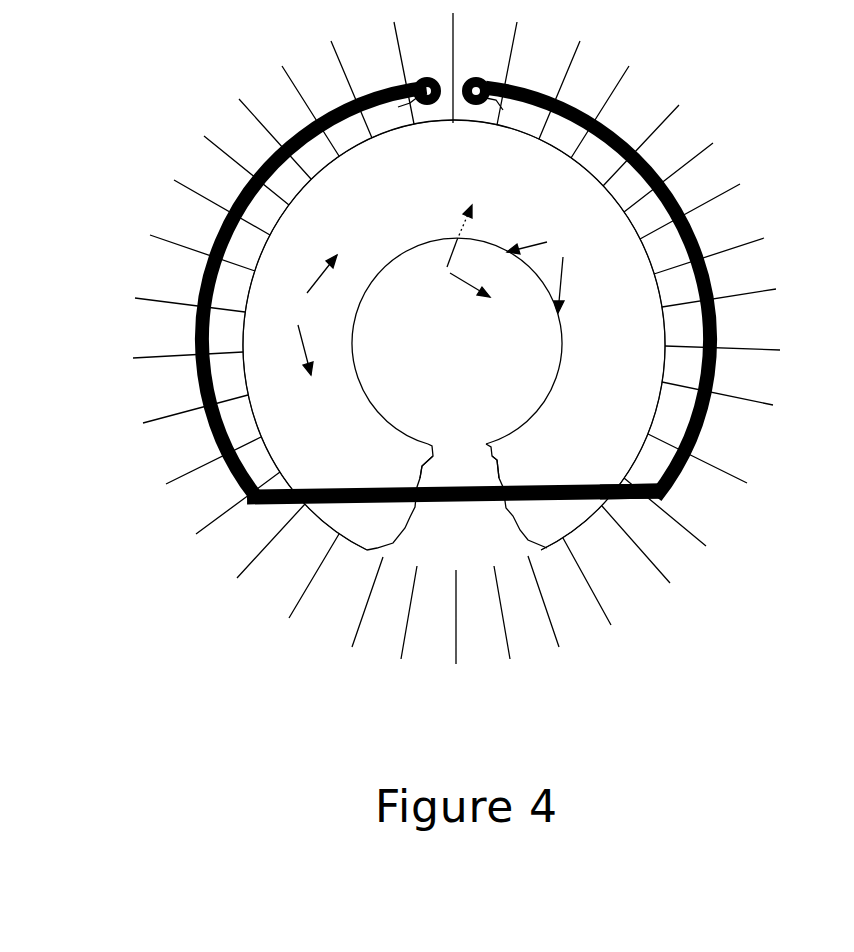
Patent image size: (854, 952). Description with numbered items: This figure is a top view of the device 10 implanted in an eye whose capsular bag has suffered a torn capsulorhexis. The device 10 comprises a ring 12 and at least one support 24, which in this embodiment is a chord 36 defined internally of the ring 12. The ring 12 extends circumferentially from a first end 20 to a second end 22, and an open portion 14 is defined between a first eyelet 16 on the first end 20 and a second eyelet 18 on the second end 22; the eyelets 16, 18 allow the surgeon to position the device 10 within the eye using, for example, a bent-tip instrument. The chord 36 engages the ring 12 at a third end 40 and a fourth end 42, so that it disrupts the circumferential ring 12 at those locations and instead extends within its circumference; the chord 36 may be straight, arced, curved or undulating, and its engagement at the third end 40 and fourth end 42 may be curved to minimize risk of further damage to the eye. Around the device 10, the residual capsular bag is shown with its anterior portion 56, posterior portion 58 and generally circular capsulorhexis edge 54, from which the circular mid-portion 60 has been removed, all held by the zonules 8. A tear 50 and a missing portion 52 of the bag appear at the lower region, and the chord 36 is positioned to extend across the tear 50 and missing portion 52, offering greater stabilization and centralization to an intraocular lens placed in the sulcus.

The zonules 8 is at (365, 623).
The device 10 is at (195, 160).
The ring 12 is at (200, 287).
The open portion 14 is at (453, 75).
The first eyelet 16 is at (398, 109).
The second eyelet 18 is at (505, 110).
The first end 20 is at (427, 80).
The second end 22 is at (476, 80).
The support 24 is at (348, 489).
The chord 36 is at (454, 335).
The third end 40 is at (247, 505).
The fourth end 42 is at (663, 498).
The tear 50 is at (510, 513).
The missing portion 52 is at (459, 493).
The capsulorhexis edge 54 is at (540, 274).
The anterior portion 56 is at (311, 315).
The posterior portion 58 is at (457, 251).
The mid-portion 60 is at (457, 341).